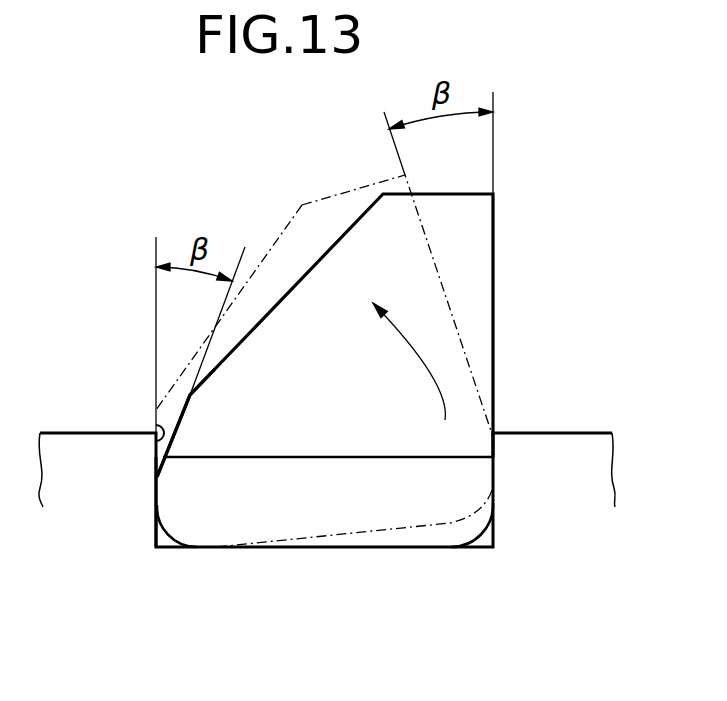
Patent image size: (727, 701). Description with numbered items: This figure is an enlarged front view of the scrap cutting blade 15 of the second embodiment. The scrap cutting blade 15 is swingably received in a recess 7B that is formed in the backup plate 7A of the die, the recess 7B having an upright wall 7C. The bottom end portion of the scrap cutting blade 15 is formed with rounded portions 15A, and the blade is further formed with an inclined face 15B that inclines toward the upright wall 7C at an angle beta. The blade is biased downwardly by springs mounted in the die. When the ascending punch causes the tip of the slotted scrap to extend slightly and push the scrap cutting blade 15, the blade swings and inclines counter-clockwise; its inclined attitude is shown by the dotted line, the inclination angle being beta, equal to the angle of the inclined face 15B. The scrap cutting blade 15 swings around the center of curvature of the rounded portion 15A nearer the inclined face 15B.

The backup plate 7A is at (562, 445).
The recess 7B is at (160, 535).
The upright wall 7C is at (157, 432).
The scrap cutting blade 15 is at (302, 205).
The rounded portion 15A is at (172, 530).
The inclined face 15B is at (177, 425).